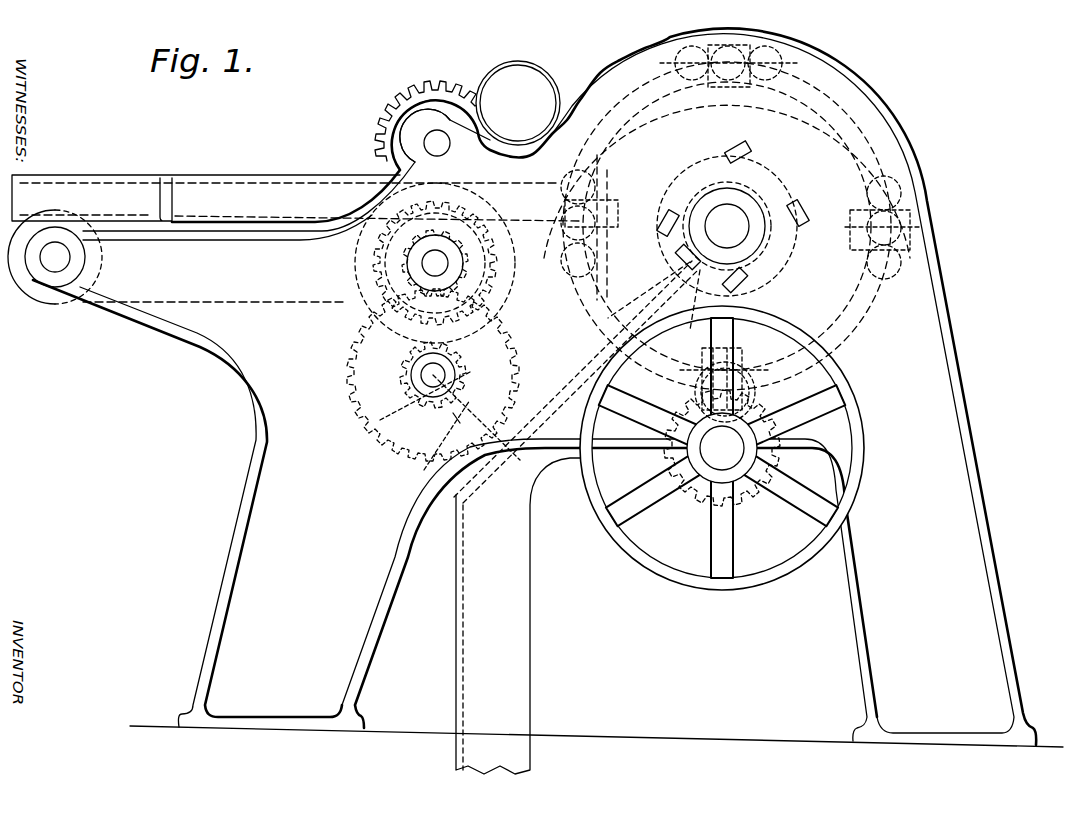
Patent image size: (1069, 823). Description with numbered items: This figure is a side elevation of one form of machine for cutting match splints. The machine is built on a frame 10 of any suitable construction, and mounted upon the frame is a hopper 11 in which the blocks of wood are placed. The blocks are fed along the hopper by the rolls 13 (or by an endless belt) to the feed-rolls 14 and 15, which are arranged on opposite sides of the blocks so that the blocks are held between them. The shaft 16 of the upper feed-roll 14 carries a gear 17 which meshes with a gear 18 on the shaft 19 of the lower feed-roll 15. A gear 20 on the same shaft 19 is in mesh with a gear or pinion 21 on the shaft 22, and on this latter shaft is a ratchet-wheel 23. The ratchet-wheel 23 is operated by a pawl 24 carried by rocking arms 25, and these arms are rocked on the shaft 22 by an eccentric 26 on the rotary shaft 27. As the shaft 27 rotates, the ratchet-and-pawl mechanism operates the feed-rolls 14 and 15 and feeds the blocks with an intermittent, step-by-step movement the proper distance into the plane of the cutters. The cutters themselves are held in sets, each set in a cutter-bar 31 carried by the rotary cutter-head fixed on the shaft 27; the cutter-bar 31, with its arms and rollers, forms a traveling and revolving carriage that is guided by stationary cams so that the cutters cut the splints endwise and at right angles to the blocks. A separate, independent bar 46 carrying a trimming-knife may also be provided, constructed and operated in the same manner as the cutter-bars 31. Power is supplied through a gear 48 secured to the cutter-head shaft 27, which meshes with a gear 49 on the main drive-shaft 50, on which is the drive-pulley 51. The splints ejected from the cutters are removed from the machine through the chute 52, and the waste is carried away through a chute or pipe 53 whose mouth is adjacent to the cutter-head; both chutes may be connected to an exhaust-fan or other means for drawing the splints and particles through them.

The frame 10 is at (169, 336).
The hopper 11 is at (144, 179).
The rolls 13 is at (40, 297).
The upper feed-roll 14 is at (407, 127).
The lower feed-roll 15 is at (397, 257).
The shaft 16 is at (424, 145).
The gear 17 is at (410, 97).
The gear 18 is at (490, 220).
The shaft 19 is at (447, 263).
The gear 20 is at (527, 342).
The gear or pinion 21 is at (383, 395).
The shaft 22 is at (441, 373).
The ratchet-wheel 23 is at (378, 438).
The pawl 24 is at (352, 333).
The rocking arms 25 is at (450, 432).
The eccentric 26 is at (666, 232).
The rotary shaft 27 is at (733, 222).
The cutter-bar 31 is at (868, 213).
The bar 46 is at (737, 88).
The gear 48 is at (764, 377).
The gear 49 is at (753, 495).
The main drive-shaft 50 is at (718, 458).
The drive-pulley 51 is at (634, 551).
The chute 52 is at (540, 90).
The chute or pipe 53 is at (532, 655).